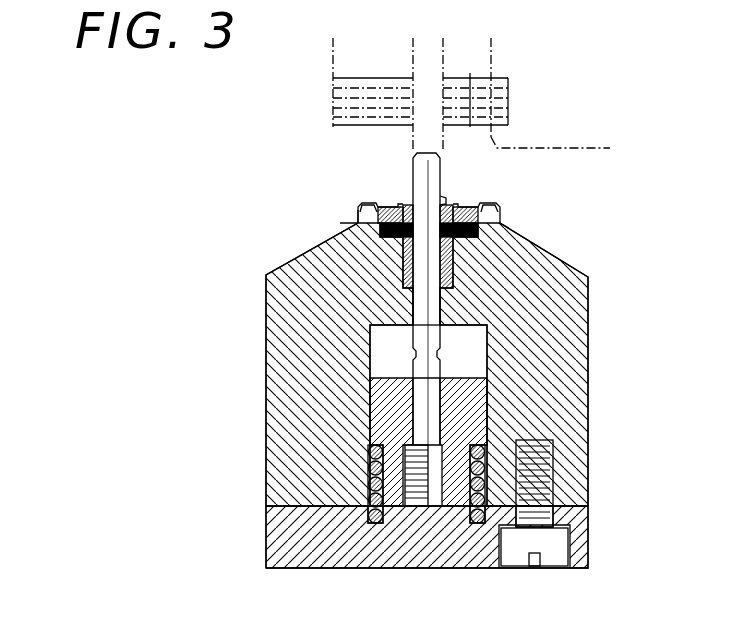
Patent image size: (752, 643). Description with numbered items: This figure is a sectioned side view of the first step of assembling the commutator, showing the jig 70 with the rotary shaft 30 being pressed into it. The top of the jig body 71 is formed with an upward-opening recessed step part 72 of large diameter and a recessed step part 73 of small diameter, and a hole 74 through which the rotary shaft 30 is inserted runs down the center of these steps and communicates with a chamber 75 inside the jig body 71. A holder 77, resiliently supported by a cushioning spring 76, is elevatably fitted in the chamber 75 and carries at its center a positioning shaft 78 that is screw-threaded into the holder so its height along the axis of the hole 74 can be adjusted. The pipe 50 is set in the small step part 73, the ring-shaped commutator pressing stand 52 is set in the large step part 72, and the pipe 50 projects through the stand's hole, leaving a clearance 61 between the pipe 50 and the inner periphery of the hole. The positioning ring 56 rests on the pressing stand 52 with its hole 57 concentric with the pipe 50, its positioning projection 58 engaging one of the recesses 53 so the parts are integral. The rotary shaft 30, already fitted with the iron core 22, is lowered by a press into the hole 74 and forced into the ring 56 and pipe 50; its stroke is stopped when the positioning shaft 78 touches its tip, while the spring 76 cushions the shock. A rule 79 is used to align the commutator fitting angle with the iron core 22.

The iron core 22 is at (312, 93).
The rotary shaft 30 is at (418, 174).
The pipe 50 is at (586, 295).
The commutator pressing stand 52 is at (480, 226).
The recesses 53 is at (378, 228).
The positioning ring 56 is at (410, 202).
The hole 57 is at (443, 200).
The positioning projection 58 is at (358, 210).
The clearance 61 is at (356, 222).
The jig 70 is at (249, 419).
The jig body 71 is at (578, 365).
The recessed step part of large diameter 72 is at (482, 212).
The recessed step part of small diameter 73 is at (457, 273).
The hole 74 is at (417, 314).
The chamber 75 is at (473, 365).
The cushioning spring 76 is at (477, 521).
The holder 77 is at (477, 413).
The positioning shaft 78 is at (422, 385).
The rule 79 is at (583, 150).